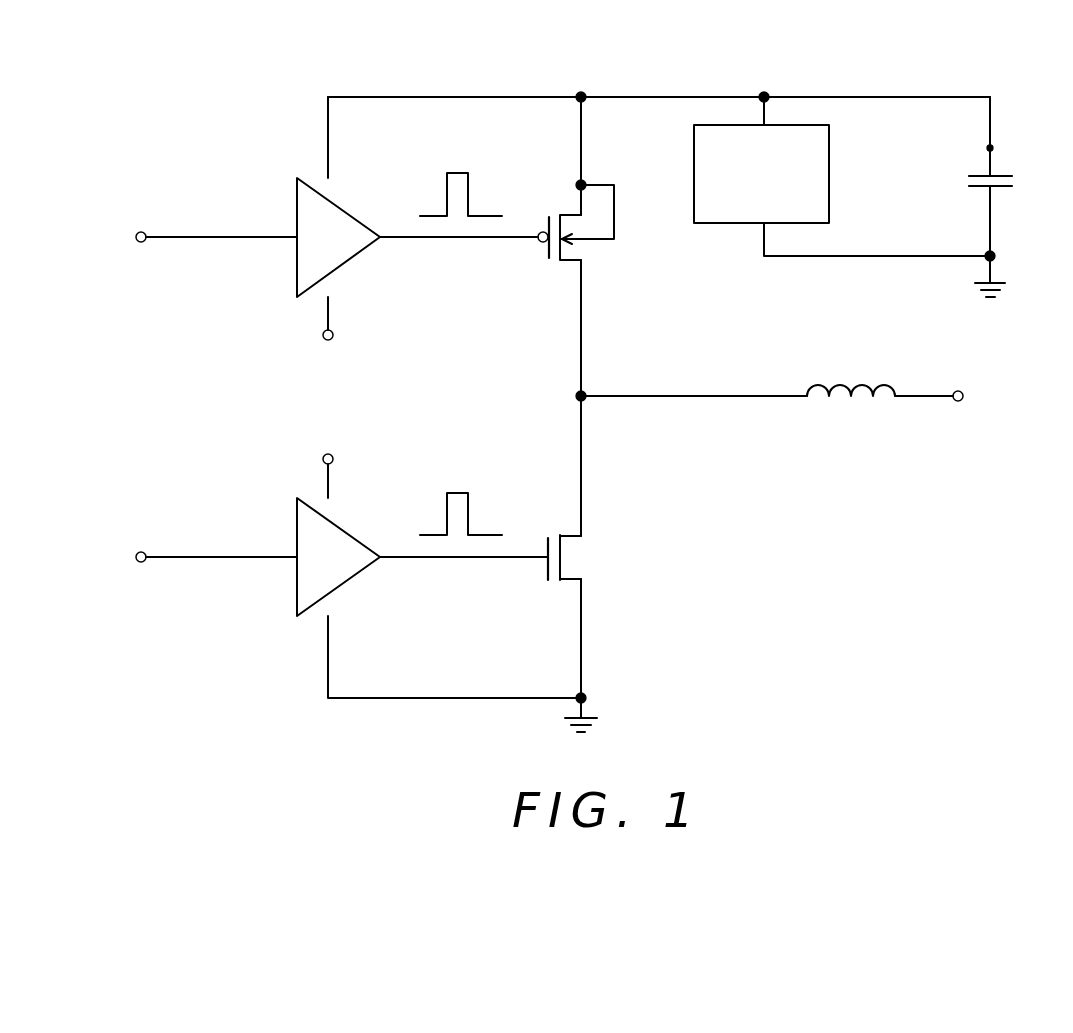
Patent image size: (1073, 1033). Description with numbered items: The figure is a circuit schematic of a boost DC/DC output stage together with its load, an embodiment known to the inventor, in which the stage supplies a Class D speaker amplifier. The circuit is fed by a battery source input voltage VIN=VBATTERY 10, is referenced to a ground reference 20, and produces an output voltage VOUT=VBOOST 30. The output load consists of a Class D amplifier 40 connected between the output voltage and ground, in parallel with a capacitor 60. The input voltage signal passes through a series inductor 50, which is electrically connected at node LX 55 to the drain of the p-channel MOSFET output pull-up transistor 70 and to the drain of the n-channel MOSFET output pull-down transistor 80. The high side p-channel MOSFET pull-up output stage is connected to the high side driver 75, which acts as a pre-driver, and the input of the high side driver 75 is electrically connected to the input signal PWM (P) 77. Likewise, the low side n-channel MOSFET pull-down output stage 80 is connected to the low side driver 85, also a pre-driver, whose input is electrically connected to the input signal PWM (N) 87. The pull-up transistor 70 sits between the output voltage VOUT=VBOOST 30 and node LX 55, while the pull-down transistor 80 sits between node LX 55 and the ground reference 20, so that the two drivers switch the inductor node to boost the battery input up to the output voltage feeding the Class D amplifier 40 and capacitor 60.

The battery source input voltage VIN=VBATTERY 10 is at (943, 402).
The ground reference 20 is at (968, 283).
The output voltage VOUT=VBOOST 30 is at (580, 93).
The Class D amplifier 40 is at (829, 135).
The series inductor 50 is at (836, 405).
The node LX 55 is at (575, 396).
The capacitor 60 is at (1000, 195).
The p-channel MOSFET output pull-up transistor 70 is at (620, 236).
The high side (HS) driver 75 is at (368, 220).
The input signal PWM (P) 77 is at (168, 253).
The n-channel MOSFET output pull-down transistor 80 is at (598, 559).
The low side (LS) driver 85 is at (368, 538).
The input signal PWM (N) 87 is at (168, 573).